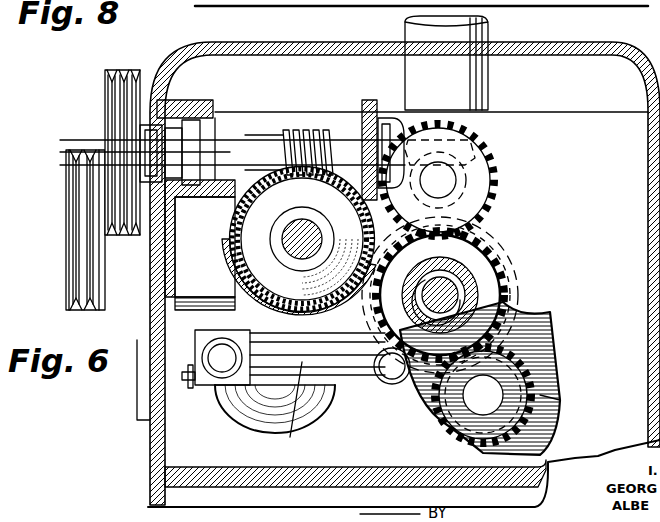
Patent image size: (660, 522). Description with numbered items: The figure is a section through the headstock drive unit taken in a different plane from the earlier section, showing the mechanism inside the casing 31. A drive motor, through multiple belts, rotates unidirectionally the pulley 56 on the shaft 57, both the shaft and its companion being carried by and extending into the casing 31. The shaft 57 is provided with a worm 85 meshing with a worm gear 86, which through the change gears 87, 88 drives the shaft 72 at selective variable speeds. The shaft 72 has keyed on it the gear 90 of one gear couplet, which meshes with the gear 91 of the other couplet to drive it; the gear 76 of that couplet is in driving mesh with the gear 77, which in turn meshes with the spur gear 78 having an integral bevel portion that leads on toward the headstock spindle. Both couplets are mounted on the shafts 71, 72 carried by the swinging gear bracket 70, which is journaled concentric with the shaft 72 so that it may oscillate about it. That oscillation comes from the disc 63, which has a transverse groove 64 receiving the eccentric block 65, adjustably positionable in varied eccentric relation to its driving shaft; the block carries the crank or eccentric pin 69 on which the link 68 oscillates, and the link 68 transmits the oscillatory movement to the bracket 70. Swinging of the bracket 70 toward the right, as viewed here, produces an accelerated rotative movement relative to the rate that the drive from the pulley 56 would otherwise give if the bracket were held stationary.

The casing 31 is at (158, 378).
The pulley 56 is at (105, 84).
The shaft 57 is at (240, 145).
The disc 63 is at (308, 404).
The transverse groove 64 is at (66, 195).
The eccentric block 65 is at (196, 340).
The link 68 is at (282, 428).
The crank or eccentric pin 69 is at (232, 358).
The swinging gear bracket 70 is at (537, 314).
The shaft 71 is at (500, 398).
The shaft 72 is at (455, 292).
The gear 76 is at (540, 352).
The gear 77 is at (498, 302).
The spur gear 78 is at (488, 165).
The worm 85 is at (305, 138).
The worm gear 86 is at (262, 170).
The change gear 87 is at (330, 378).
The change gear 88 is at (372, 300).
The gear 90 is at (485, 252).
The gear 91 is at (505, 342).